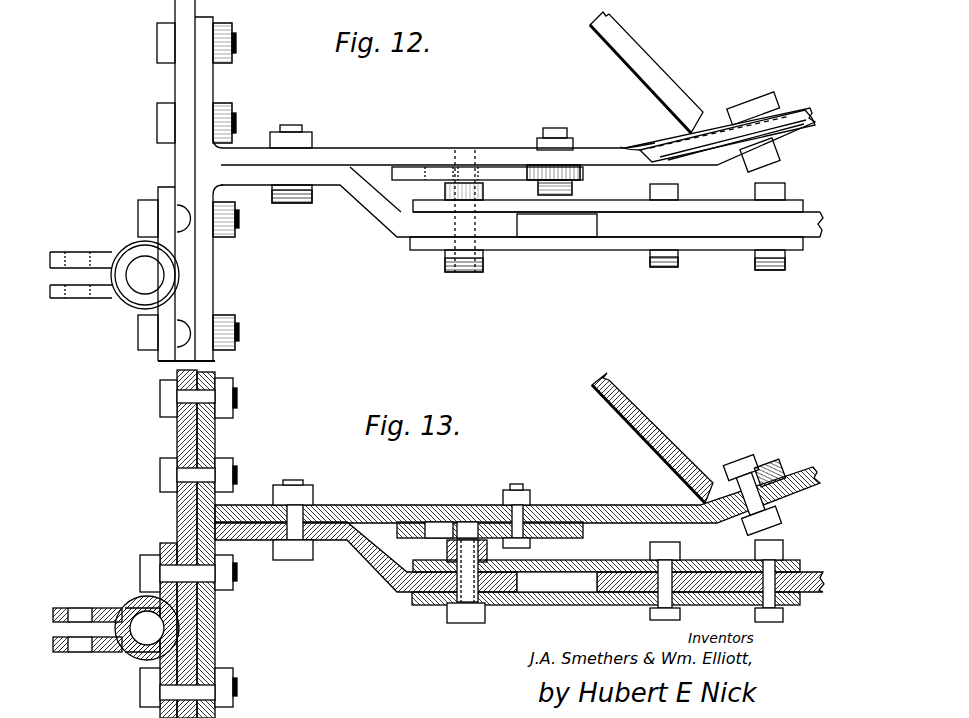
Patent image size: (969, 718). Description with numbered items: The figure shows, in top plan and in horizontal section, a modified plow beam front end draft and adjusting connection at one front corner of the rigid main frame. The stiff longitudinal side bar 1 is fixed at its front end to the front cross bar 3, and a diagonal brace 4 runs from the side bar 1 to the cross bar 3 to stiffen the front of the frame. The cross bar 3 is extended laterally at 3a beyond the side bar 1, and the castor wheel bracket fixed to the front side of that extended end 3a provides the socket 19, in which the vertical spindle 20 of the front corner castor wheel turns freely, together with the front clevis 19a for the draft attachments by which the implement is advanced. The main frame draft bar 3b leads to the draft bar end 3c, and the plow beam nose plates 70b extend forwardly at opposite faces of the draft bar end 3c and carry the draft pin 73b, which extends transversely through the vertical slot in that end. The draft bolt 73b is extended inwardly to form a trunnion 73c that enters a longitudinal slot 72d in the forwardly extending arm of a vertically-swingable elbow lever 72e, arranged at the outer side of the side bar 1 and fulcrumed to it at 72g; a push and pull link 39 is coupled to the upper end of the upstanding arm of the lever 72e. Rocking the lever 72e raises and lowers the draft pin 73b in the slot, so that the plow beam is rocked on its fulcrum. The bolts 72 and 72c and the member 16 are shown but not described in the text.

In FIG. 12, the side bar 1 is at (388, 150).
In FIG. 13, the side bar 1 is at (250, 506).
In FIG. 12, the front cross bar 3 is at (178, 78).
In FIG. 13, the front cross bar 3 is at (187, 544).
In FIG. 12, the laterally extended end of front cross bar 3a is at (186, 278).
In FIG. 13, the laterally extended end of front cross bar 3a is at (216, 710).
In FIG. 12, the draft bar 3b is at (210, 300).
In FIG. 13, the draft bar 3b is at (328, 504).
In FIG. 12, the draft bar end 3c is at (412, 234).
In FIG. 13, the draft bar end 3c is at (412, 585).
In FIG. 12, the diagonal brace 4 is at (627, 52).
In FIG. 13, the diagonal brace 4 is at (655, 444).
In FIG. 12, the beam 16 is at (708, 224).
In FIG. 13, the beam 16 is at (808, 560).
In FIG. 12, the socket 19 is at (128, 242).
In FIG. 13, the socket 19 is at (128, 652).
In FIG. 12, the front clevis 19a is at (78, 262).
In FIG. 13, the front clevis 19a is at (62, 610).
In FIG. 12, the vertical spindle 20 is at (143, 282).
In FIG. 12, the push and pull link 39 is at (716, 128).
In FIG. 13, the push and pull link 39 is at (753, 495).
In FIG. 12, the nose plate 70b is at (565, 212).
In FIG. 13, the nose plate 70b is at (578, 595).
In FIG. 12, the bolt 72 is at (291, 164).
In FIG. 13, the bolt 72 is at (293, 520).
In FIG. 12, the bolt 72c is at (505, 165).
In FIG. 12, the longitudinal slot 72d is at (438, 172).
In FIG. 13, the longitudinal slot 72d is at (428, 528).
In FIG. 13, the elbow lever 72e is at (546, 520).
In FIG. 13, the fulcrum 72g is at (516, 500).
In FIG. 12, the draft pin 73b is at (462, 265).
In FIG. 13, the draft pin 73b is at (468, 615).
In FIG. 12, the trunnion 73c is at (470, 178).
In FIG. 13, the trunnion 73c is at (466, 528).